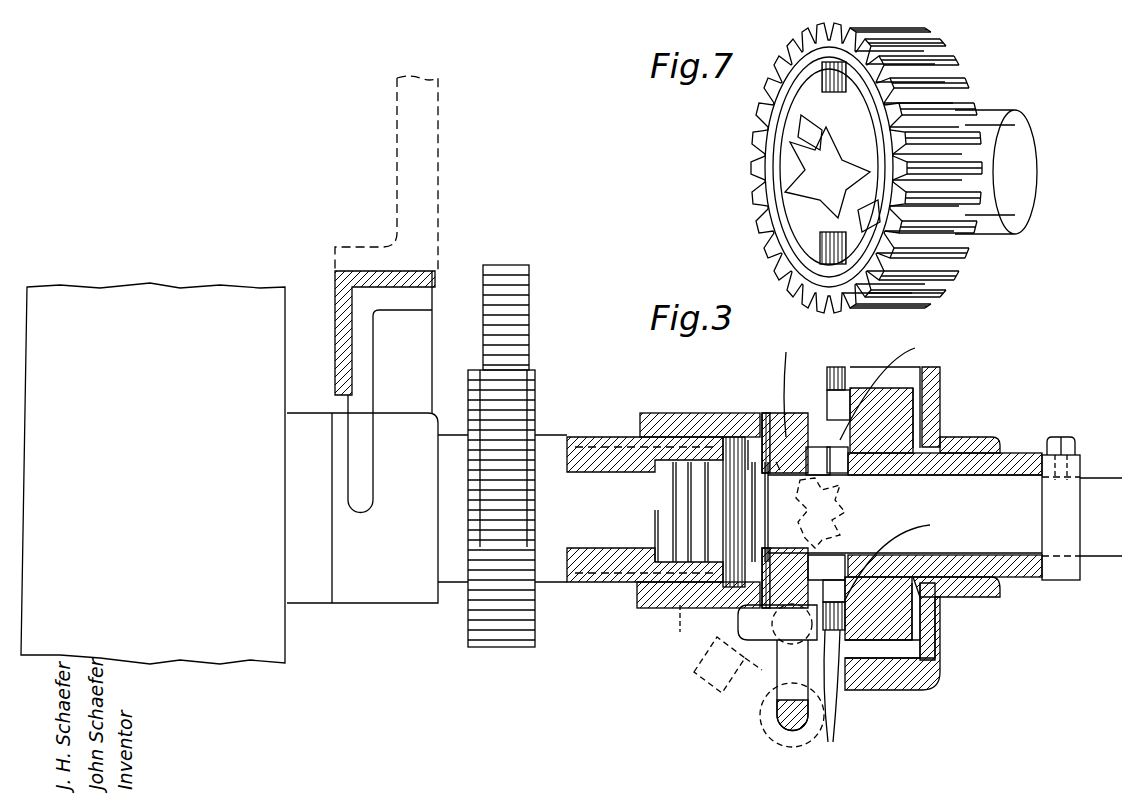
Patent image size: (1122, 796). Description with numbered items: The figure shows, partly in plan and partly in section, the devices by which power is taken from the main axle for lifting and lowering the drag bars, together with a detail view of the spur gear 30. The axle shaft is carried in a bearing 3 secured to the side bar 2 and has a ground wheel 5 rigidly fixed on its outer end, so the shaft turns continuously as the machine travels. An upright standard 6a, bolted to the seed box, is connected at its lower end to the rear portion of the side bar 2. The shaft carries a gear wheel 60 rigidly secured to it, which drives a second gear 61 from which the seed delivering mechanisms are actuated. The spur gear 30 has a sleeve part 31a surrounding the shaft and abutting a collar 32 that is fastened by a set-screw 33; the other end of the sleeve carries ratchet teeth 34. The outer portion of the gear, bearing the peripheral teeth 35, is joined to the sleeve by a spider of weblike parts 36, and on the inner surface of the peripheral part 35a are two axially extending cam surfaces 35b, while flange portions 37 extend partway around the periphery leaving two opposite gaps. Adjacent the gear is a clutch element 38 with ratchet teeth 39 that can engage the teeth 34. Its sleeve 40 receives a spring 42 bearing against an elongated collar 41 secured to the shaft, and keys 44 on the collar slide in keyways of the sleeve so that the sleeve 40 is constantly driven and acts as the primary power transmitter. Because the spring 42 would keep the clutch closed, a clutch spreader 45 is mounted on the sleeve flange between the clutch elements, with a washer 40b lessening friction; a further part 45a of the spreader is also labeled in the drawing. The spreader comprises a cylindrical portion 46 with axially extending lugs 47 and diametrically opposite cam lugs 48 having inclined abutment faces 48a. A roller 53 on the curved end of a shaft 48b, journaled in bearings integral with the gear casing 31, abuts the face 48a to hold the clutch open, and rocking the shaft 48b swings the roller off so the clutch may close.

In FIG. 3, the side bar 2 is at (340, 325).
In FIG. 3, the bearing 3 is at (392, 605).
In FIG. 3, the ground wheel 5 is at (153, 473).
In FIG. 3, the upright standard 6a is at (440, 156).
In FIG. 7, the spur gear 30 is at (955, 112).
In FIG. 3, the spur gear 30 is at (866, 392).
In FIG. 3, the gear casing 31 is at (918, 676).
In FIG. 7, the sleeve part 31a is at (1030, 186).
In FIG. 3, the sleeve part 31a is at (1022, 580).
In FIG. 3, the collar 32 is at (1062, 582).
In FIG. 3, the set-screw 33 is at (1057, 437).
In FIG. 7, the ratchet teeth 34 is at (800, 180).
In FIG. 3, the ratchet teeth 34 is at (842, 462).
In FIG. 7, the peripheral teeth 35 is at (938, 266).
In FIG. 3, the peripheral teeth 35 is at (892, 367).
In FIG. 3, the peripheral part 35a is at (945, 365).
In FIG. 7, the cam surface 35b is at (868, 140).
In FIG. 3, the cam surface 35b is at (897, 457).
In FIG. 7, the weblike part 36 is at (800, 65).
In FIG. 3, the weblike part 36 is at (942, 420).
In FIG. 7, the flange portion 37 is at (855, 112).
In FIG. 3, the flange portion 37 is at (838, 367).
In FIG. 3, the clutch element 38 is at (738, 614).
In FIG. 3, the ratchet teeth 39 is at (812, 447).
In FIG. 3, the sleeve 40 is at (672, 412).
In FIG. 3, the washer 40b is at (748, 440).
In FIG. 3, the elongated collar 41 is at (605, 565).
In FIG. 3, the spring 42 is at (735, 437).
In FIG. 3, the key 44 is at (720, 600).
In FIG. 3, the clutch spreader 45 is at (772, 430).
In FIG. 3, the clutch tooth 45a is at (778, 470).
In FIG. 3, the cylindrical portion 46 is at (784, 384).
In FIG. 3, the axially extending lug 47 is at (940, 392).
In FIG. 3, the cam lug 48 is at (740, 628).
In FIG. 3, the abutment face 48a is at (776, 704).
In FIG. 3, the shaft 48b is at (797, 735).
In FIG. 3, the roller 53 is at (768, 650).
In FIG. 3, the gear wheel 60 is at (478, 647).
In FIG. 3, the gear 61 is at (532, 283).